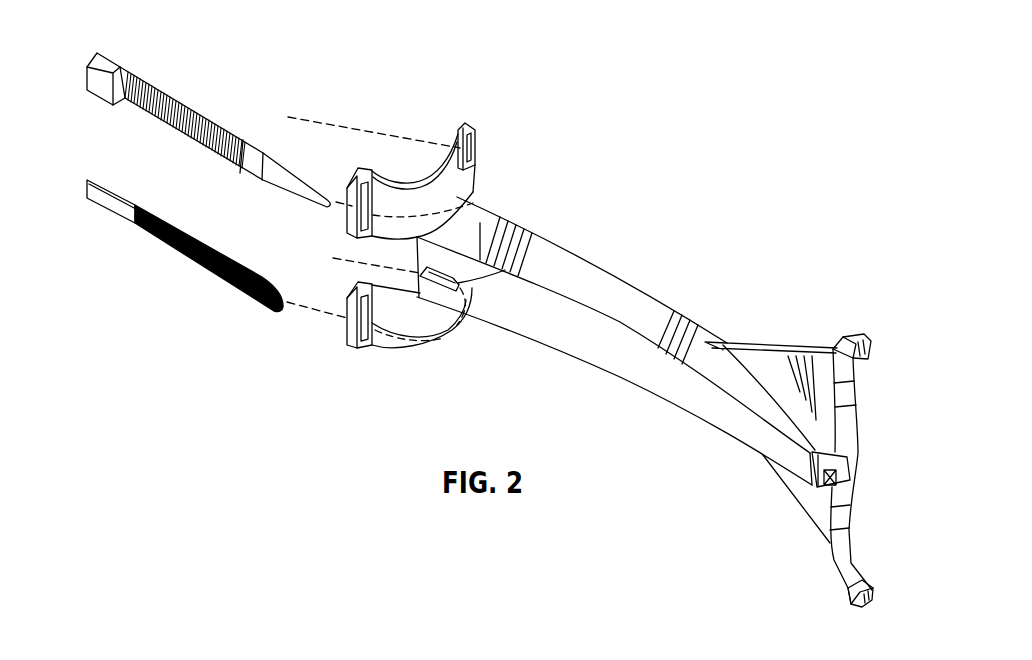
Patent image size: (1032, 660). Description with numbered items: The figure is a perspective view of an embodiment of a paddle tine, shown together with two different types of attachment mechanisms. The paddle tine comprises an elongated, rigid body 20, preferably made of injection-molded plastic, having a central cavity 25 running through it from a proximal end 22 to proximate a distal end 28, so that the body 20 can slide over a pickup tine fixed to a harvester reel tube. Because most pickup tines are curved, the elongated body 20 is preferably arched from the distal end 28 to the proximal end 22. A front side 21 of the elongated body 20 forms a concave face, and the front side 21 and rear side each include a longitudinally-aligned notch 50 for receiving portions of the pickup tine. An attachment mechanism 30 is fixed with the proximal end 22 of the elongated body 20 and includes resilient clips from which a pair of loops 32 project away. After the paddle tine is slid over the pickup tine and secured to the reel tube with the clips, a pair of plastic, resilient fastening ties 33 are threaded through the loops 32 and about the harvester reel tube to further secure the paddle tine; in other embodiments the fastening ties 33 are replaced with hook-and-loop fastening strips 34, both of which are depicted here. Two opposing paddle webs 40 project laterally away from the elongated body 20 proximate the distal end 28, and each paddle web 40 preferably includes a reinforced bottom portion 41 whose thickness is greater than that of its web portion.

The elongated body 20 is at (535, 214).
The front side 21 is at (508, 310).
The proximal end 22 is at (482, 214).
The central cavity 25 is at (821, 482).
The distal end 28 is at (800, 469).
The attachment mechanism 30 is at (492, 144).
The loops 32 is at (456, 127).
The fastening ties 33 is at (190, 105).
The hook-and-loop fastening strips 34 is at (228, 262).
The paddle webs 40 is at (850, 323).
The reinforced bottom portion 41 is at (848, 558).
The notch 50 is at (528, 240).